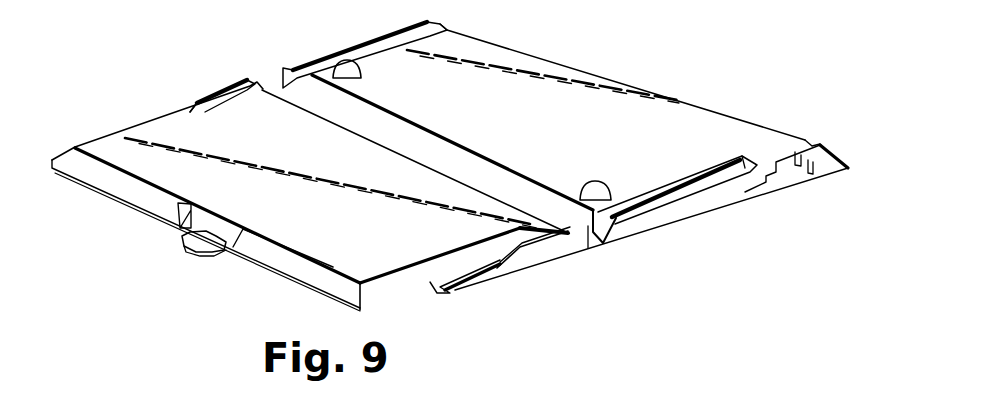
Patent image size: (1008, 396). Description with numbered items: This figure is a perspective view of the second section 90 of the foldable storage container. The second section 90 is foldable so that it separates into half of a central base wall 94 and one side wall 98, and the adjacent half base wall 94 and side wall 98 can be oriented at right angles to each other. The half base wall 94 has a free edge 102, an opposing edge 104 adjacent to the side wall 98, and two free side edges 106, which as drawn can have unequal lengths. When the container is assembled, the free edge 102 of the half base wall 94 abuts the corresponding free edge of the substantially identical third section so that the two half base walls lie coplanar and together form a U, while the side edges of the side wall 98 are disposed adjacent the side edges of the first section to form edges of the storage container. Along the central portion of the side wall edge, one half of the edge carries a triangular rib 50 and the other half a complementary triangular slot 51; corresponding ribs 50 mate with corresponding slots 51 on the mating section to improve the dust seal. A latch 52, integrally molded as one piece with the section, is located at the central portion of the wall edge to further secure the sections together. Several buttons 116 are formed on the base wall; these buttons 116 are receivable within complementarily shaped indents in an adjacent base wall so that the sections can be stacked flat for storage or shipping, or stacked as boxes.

The triangular rib 50 is at (490, 280).
The triangular slot 51 is at (457, 292).
The latch 52 is at (192, 251).
The second section 90 is at (137, 203).
The half base wall 94 is at (672, 108).
The side wall 98 is at (175, 132).
The free edge 102 is at (830, 153).
The opposing edge 104 is at (596, 244).
The free side edge 106 is at (290, 263).
The button 116 is at (595, 185).